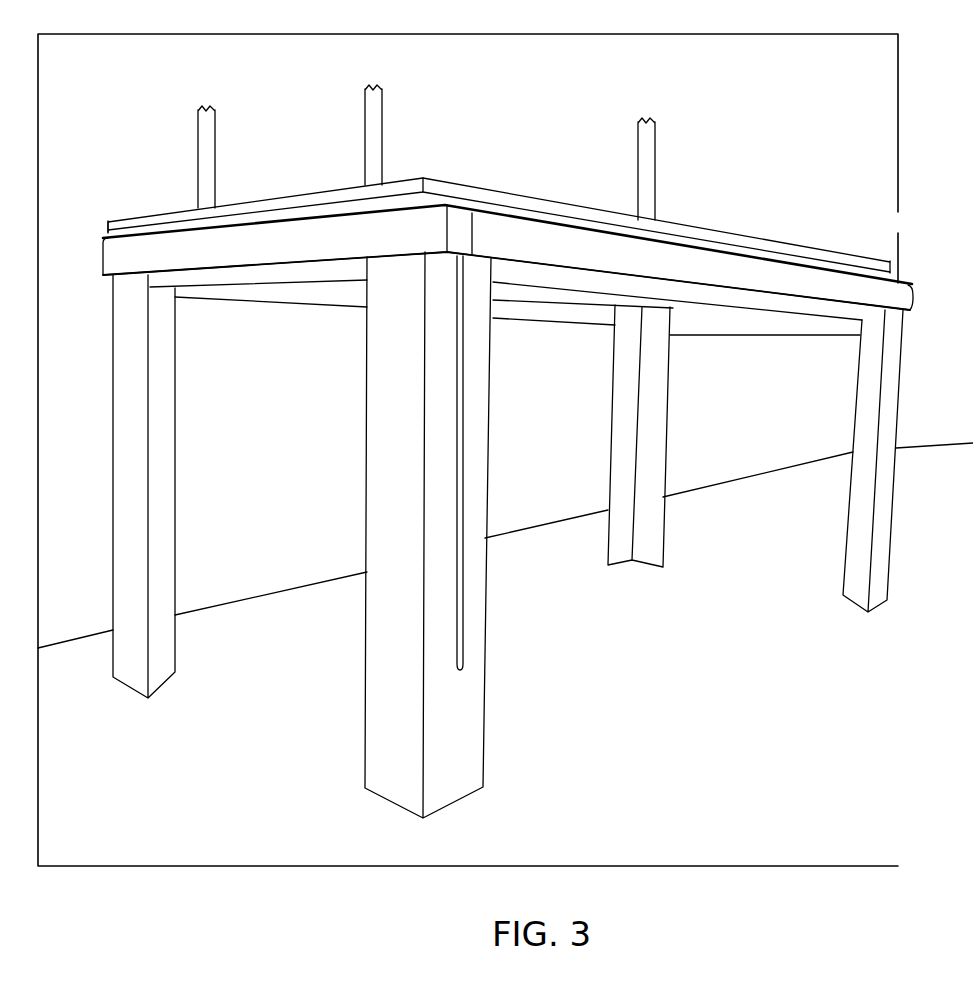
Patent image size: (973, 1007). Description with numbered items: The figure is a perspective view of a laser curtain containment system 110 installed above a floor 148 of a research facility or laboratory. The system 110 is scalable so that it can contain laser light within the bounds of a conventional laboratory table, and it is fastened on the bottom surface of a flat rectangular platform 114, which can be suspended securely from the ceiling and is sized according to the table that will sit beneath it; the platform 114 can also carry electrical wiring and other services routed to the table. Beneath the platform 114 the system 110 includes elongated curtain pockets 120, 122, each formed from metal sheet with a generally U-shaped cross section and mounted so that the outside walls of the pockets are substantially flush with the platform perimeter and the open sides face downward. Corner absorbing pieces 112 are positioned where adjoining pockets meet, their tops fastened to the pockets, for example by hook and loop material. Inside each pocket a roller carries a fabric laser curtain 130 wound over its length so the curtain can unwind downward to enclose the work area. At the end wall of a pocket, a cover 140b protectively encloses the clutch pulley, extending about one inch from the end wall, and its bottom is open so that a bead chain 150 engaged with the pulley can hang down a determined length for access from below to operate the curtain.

The laser curtain containment system 110 is at (102, 253).
The corner absorbing piece 112 is at (123, 458).
The platform 114 is at (108, 221).
The curtain pocket 120 is at (775, 272).
The curtain pocket 122 is at (297, 230).
The laser curtain 130 is at (227, 275).
The cover 140b is at (466, 216).
The floor 148 is at (743, 708).
The bead chain 150 is at (463, 573).